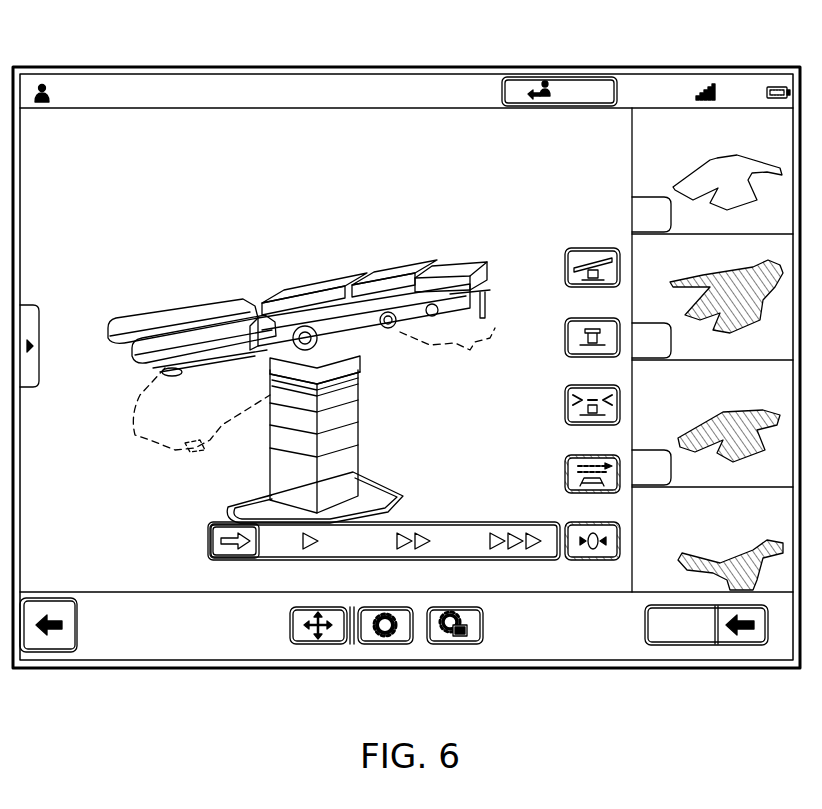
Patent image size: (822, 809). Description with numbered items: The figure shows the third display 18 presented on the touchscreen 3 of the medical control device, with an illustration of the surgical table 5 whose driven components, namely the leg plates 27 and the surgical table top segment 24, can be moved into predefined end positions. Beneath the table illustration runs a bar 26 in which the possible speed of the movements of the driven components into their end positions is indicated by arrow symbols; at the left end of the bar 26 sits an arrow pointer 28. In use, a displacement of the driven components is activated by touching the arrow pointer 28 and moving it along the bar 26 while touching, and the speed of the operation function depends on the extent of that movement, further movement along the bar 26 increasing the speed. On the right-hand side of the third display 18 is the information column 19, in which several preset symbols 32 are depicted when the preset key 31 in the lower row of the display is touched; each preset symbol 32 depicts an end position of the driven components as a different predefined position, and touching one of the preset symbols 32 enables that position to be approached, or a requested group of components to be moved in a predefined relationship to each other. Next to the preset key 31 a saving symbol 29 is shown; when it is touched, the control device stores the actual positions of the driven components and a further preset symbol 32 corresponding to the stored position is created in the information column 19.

The touchscreen 3 is at (84, 24).
The third display 18 is at (462, 72).
The information column 19 is at (688, 135).
The surgical table 5 is at (278, 292).
The surgical table top segment 24 is at (385, 288).
The leg plates 27 is at (185, 335).
The arrow pointer 28 is at (233, 553).
The bar 26 is at (457, 543).
The preset key 31 is at (400, 636).
The saving symbol 29 is at (473, 636).
The preset symbols 32 is at (648, 170).